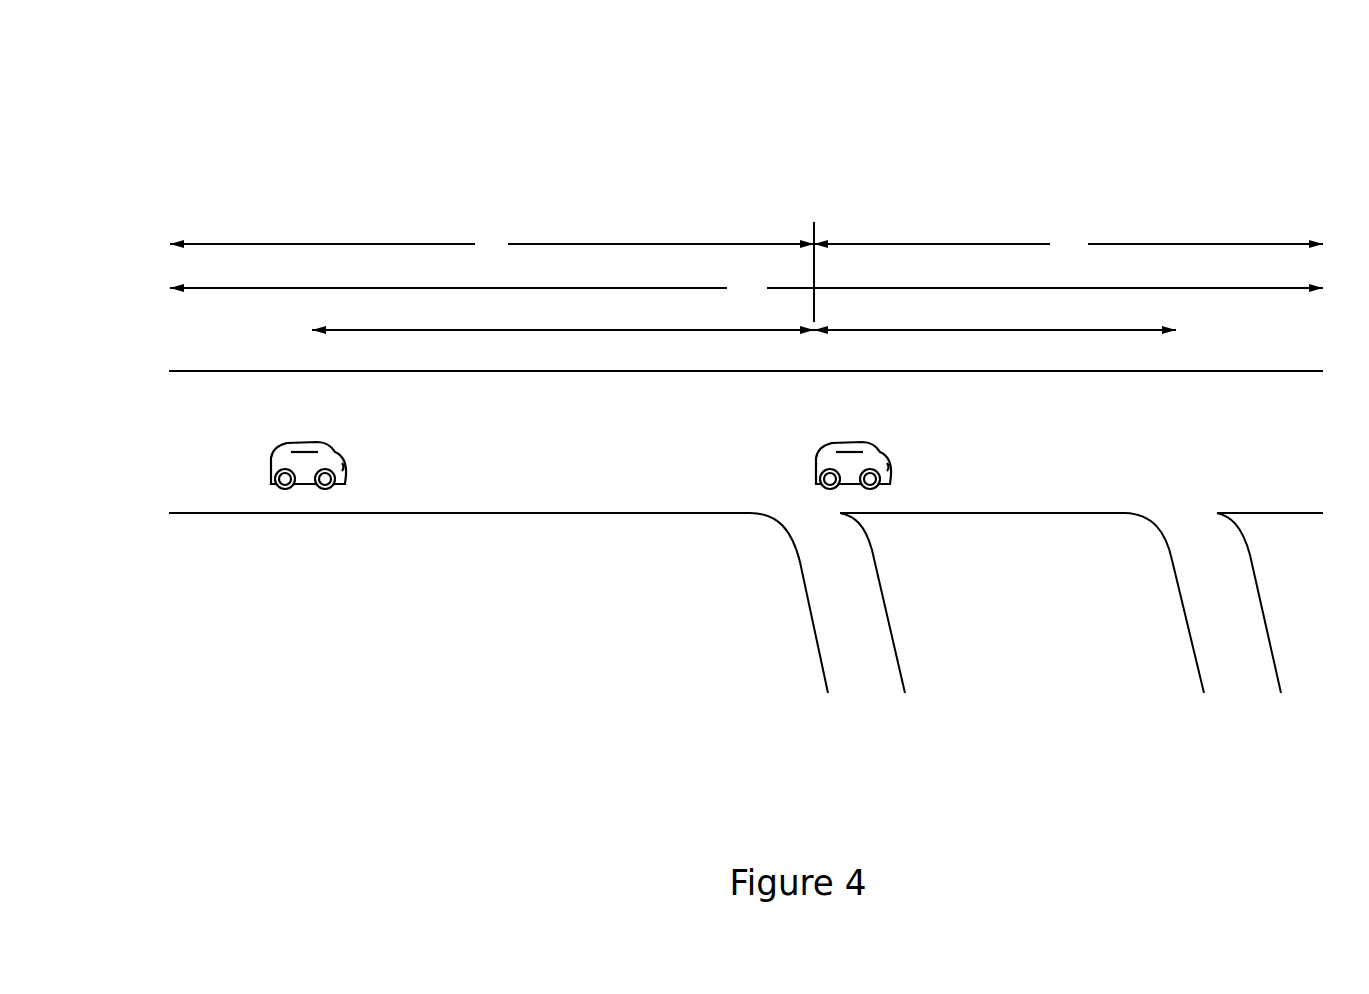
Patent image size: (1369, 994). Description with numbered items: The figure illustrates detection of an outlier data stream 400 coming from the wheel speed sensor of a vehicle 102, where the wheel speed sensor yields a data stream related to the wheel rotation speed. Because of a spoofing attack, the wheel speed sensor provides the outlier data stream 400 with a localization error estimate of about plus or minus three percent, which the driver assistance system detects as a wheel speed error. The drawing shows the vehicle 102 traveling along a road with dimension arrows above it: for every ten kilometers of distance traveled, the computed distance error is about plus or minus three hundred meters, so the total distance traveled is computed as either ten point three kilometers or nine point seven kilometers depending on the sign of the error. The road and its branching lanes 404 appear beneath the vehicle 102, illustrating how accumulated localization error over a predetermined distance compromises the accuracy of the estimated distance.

The outlier data stream 400 is at (140, 125).
The vehicle 102 is at (273, 488).
The road / exit lane 404 is at (695, 515).